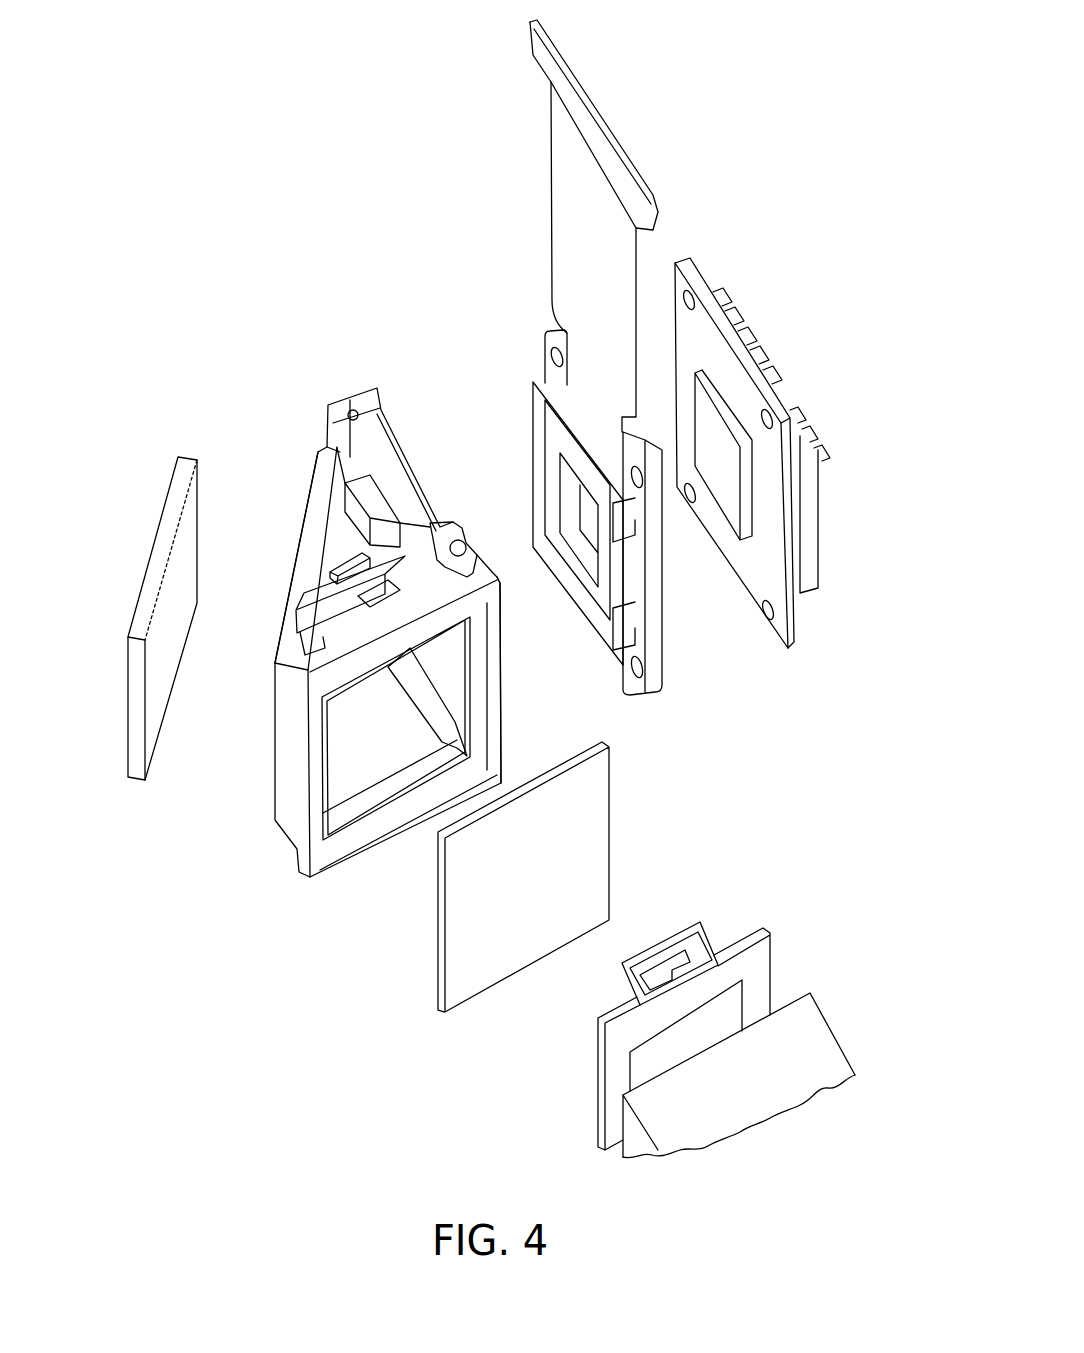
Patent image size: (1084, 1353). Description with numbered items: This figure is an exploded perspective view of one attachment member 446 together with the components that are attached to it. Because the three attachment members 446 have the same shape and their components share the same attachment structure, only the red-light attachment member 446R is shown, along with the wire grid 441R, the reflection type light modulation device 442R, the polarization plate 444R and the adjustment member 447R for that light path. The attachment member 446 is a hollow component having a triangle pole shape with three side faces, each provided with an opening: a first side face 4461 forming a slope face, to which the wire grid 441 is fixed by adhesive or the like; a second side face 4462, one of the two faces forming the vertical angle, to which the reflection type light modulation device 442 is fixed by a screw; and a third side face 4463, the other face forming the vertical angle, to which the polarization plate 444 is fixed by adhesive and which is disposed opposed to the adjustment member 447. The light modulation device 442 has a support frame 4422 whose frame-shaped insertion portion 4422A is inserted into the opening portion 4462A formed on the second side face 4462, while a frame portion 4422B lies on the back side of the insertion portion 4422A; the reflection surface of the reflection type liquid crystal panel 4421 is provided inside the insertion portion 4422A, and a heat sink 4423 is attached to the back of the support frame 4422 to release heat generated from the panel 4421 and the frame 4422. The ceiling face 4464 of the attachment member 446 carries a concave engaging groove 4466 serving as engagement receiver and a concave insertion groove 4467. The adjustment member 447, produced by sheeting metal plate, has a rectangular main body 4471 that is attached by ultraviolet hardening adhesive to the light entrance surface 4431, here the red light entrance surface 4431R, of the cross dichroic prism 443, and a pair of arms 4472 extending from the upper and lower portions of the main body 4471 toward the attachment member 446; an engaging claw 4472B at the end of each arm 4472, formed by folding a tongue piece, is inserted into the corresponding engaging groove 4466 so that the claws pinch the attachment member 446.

The wire grid 441R is at (170, 511).
The wire grid 441 is at (137, 618).
The attachment member 446R is at (327, 513).
The attachment member 446 is at (400, 632).
The first side face 4461 is at (281, 644).
The second side face 4462 is at (413, 472).
The opening portion 4462A is at (441, 716).
The third side face 4463 is at (498, 684).
The ceiling face 4464 is at (322, 543).
The engaging groove 4466 is at (336, 583).
The insertion groove 4467 is at (317, 620).
The reflection type light modulation device 442R is at (542, 355).
The reflection type light modulation device 442 is at (638, 369).
The reflection type liquid crystal panel 4421 is at (585, 521).
The support frame 4422 is at (778, 663).
The insertion portion 4422A is at (633, 602).
The frame portion 4422B is at (657, 583).
The heat sink 4423 is at (690, 262).
The polarization plate 444R is at (600, 841).
The polarization plate 444 is at (575, 877).
The adjustment member 447R is at (745, 935).
The adjustment member 447 is at (661, 996).
The main body 4471 is at (617, 1045).
The arm 4472 is at (712, 911).
The engaging claw 4472B is at (627, 970).
The cross dichroic prism 443 is at (798, 1100).
The light entrance surface 4431R is at (793, 993).
The light entrance surface 4431 is at (740, 1012).